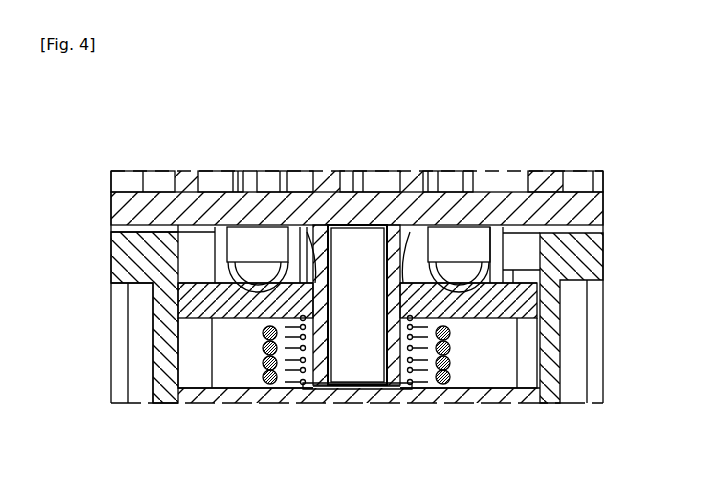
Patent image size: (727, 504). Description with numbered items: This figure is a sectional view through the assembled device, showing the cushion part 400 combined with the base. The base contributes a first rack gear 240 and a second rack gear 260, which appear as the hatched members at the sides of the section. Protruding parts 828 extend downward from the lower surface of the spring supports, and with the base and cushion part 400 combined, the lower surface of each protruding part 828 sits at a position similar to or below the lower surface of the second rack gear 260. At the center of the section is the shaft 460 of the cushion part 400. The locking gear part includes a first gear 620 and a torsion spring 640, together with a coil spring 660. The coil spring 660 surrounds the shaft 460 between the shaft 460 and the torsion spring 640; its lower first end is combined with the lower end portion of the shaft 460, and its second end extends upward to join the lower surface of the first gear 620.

The cushion part 400 is at (488, 186).
The second rack gear 260 is at (530, 242).
The first rack gear 240 is at (167, 252).
The protruding part 828 is at (495, 268).
The first gear 620 is at (528, 290).
The torsion spring 640 is at (452, 340).
The coil spring 660 is at (425, 362).
The shaft 460 is at (317, 385).